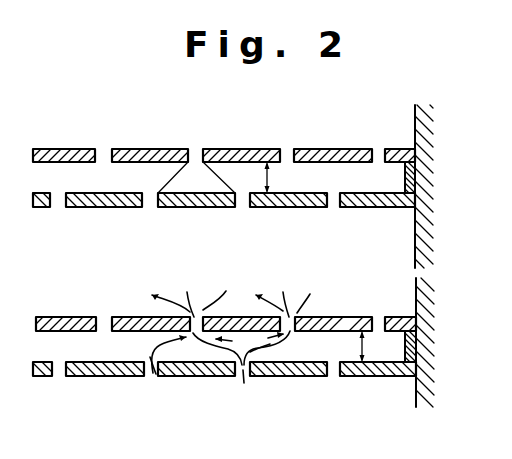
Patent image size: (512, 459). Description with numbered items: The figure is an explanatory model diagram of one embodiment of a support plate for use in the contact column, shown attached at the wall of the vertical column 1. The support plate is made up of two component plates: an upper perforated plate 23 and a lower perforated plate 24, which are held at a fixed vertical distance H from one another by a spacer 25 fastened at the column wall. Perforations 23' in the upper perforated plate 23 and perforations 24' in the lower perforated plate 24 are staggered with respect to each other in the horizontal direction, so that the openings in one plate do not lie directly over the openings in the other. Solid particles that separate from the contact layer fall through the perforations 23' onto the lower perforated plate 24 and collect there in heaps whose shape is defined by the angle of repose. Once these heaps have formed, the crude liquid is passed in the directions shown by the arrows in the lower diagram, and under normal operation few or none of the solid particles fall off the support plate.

The upper perforated plate 23 is at (224, 218).
The perforations in the upper perforated plate 23' is at (205, 213).
The lower perforated plate 24 is at (224, 313).
The perforations in the lower perforated plate 24' is at (205, 320).
The spacer 25 is at (412, 178).
The vertical column 1 is at (420, 233).
The vertical distance between the perforated plates H is at (266, 172).